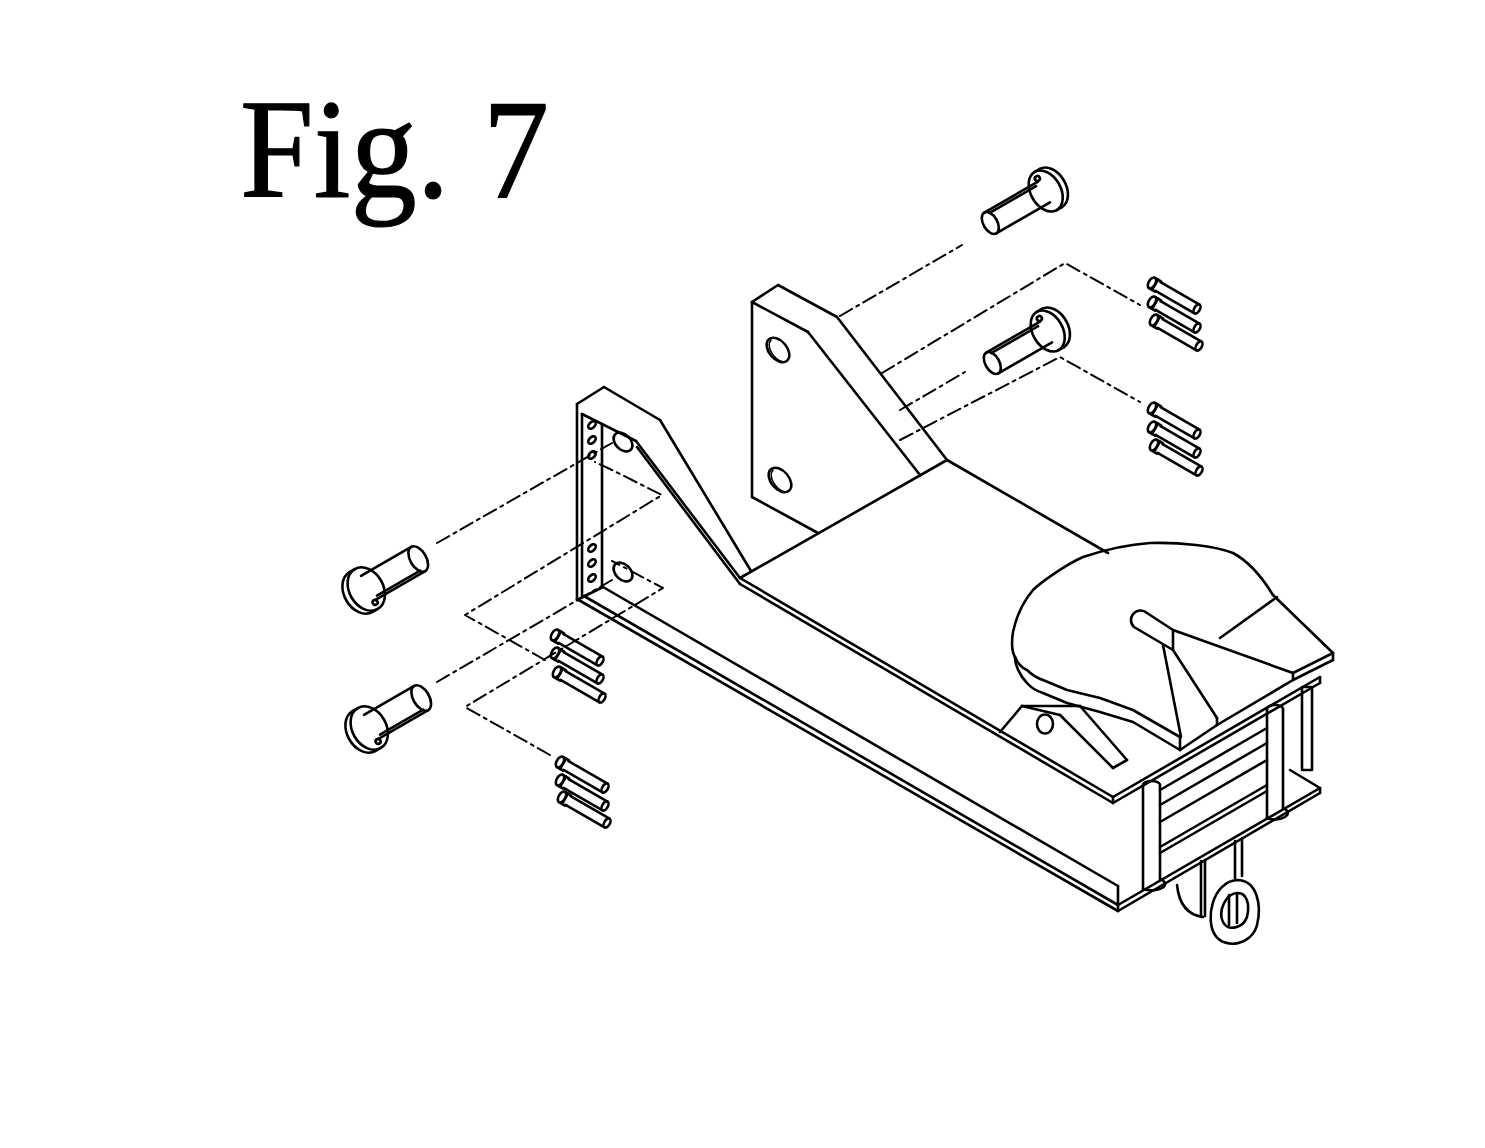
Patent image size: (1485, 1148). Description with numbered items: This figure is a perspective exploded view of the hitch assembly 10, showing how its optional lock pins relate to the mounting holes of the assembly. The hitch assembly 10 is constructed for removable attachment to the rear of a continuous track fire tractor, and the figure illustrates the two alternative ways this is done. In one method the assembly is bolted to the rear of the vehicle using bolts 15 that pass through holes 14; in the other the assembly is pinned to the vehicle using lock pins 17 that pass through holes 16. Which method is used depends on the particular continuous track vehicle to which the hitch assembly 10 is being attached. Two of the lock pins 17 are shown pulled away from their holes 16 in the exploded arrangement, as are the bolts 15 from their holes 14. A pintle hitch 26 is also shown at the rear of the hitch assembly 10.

The hitch assembly 10 is at (1040, 537).
The holes 14 is at (590, 442).
The bolts 15 is at (578, 813).
The holes 16 is at (767, 357).
The lock pins 17 is at (1062, 197).
The pintle hitch 26 is at (1257, 923).